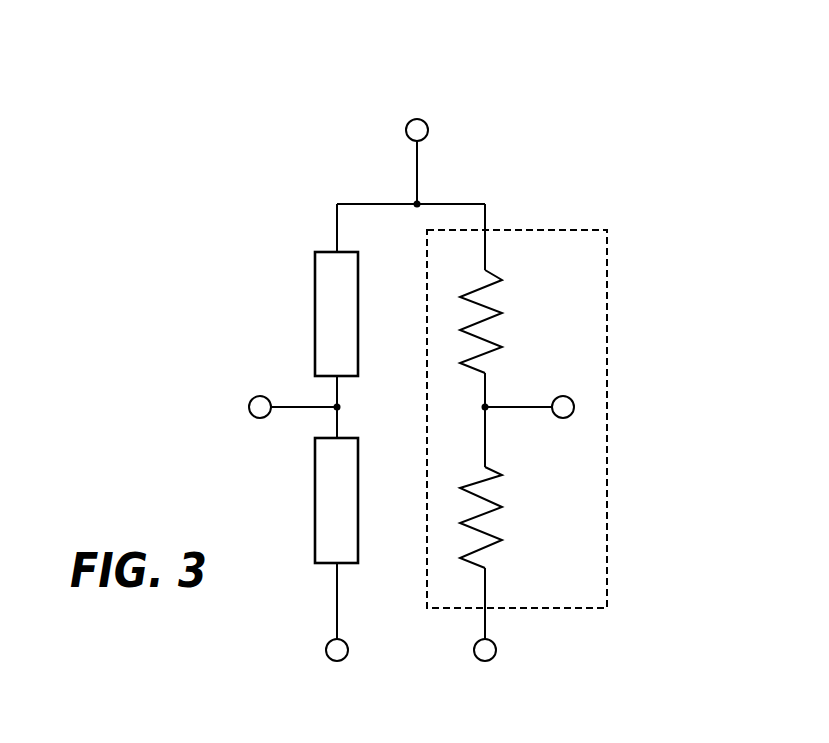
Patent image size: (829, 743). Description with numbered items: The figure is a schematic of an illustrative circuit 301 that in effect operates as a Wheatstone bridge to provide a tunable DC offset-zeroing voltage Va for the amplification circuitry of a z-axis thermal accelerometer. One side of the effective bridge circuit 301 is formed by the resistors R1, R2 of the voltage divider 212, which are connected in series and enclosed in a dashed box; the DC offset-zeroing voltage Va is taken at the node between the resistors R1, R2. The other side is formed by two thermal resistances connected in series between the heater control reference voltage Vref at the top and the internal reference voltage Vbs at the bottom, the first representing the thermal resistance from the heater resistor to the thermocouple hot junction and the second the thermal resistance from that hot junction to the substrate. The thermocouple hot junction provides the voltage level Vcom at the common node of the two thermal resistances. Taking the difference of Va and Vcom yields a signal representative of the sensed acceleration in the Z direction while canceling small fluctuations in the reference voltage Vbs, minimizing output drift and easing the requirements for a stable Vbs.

The circuit 301 is at (227, 202).
The voltage divider 212 is at (607, 242).
The resistor R1 is at (503, 321).
The resistor R2 is at (503, 517).
The heater control reference voltage Vref is at (415, 112).
The voltage level at common node Vcom is at (262, 409).
The DC offset-zeroing voltage Va is at (536, 396).
The internal reference voltage Vbs is at (409, 670).